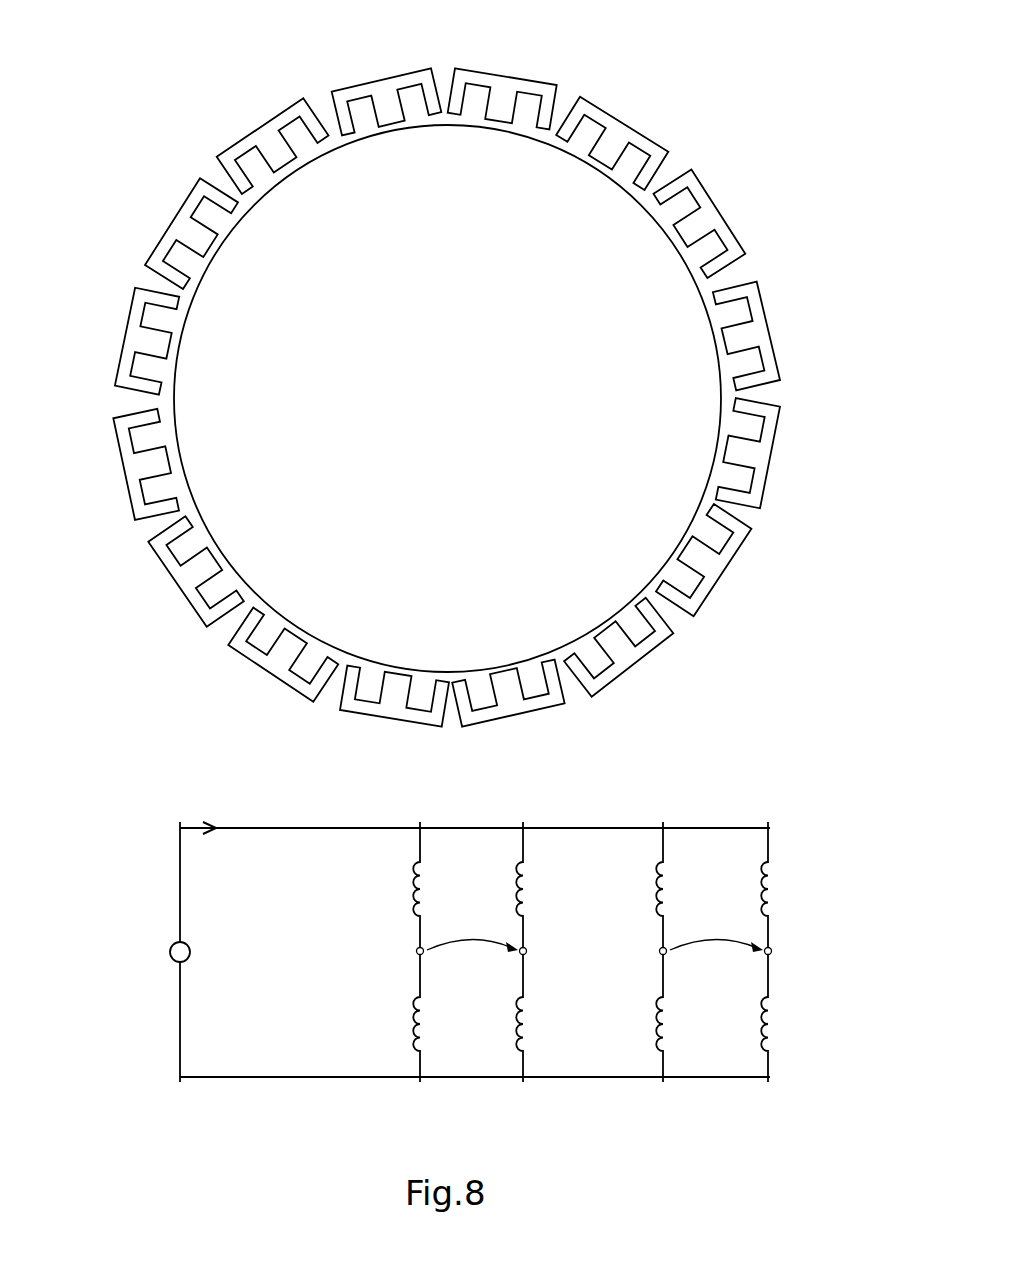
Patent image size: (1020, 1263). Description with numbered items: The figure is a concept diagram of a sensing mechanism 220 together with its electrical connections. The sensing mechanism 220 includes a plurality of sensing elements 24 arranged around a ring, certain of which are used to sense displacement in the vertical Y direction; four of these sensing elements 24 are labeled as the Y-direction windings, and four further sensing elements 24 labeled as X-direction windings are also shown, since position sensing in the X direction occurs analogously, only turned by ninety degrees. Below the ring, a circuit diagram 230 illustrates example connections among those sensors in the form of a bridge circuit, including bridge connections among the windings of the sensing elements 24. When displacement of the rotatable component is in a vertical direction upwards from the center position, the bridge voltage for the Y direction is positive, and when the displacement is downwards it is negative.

The sensing elements 24 is at (408, 70).
The sensing mechanism 220 is at (730, 120).
The circuit diagram 230 is at (132, 884).